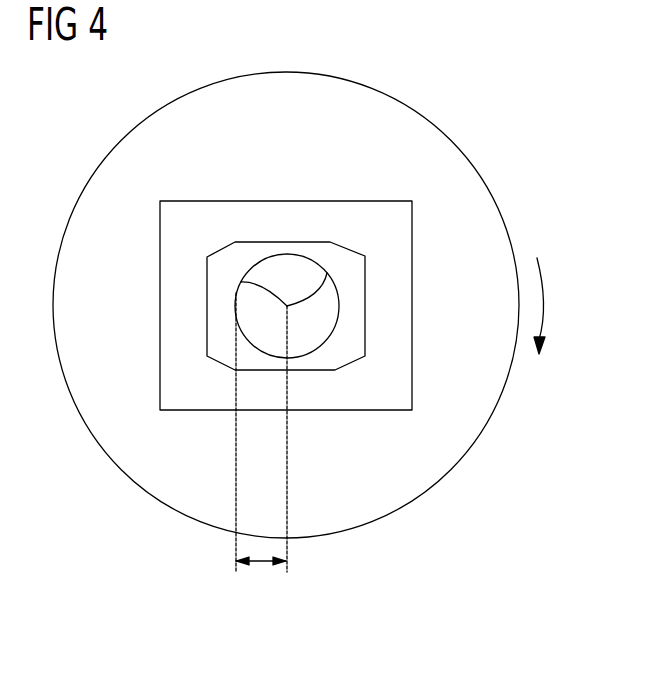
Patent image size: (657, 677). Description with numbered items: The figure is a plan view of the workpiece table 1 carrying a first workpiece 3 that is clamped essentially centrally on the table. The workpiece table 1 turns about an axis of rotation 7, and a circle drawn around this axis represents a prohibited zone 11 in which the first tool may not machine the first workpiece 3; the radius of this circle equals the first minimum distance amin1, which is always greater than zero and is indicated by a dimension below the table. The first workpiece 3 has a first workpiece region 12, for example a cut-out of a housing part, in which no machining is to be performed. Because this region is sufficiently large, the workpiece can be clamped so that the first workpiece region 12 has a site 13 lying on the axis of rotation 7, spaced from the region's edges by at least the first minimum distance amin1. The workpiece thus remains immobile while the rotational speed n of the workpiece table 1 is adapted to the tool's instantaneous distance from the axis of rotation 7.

The workpiece table 1 is at (283, 72).
The first workpiece 3 is at (231, 201).
The axis of rotation 7 is at (241, 282).
The prohibited zone 11 is at (339, 300).
The first workpiece region 12 is at (273, 241).
The site 13 is at (327, 273).
The rotational speed n is at (543, 300).
The first minimum distance amin1 is at (260, 562).